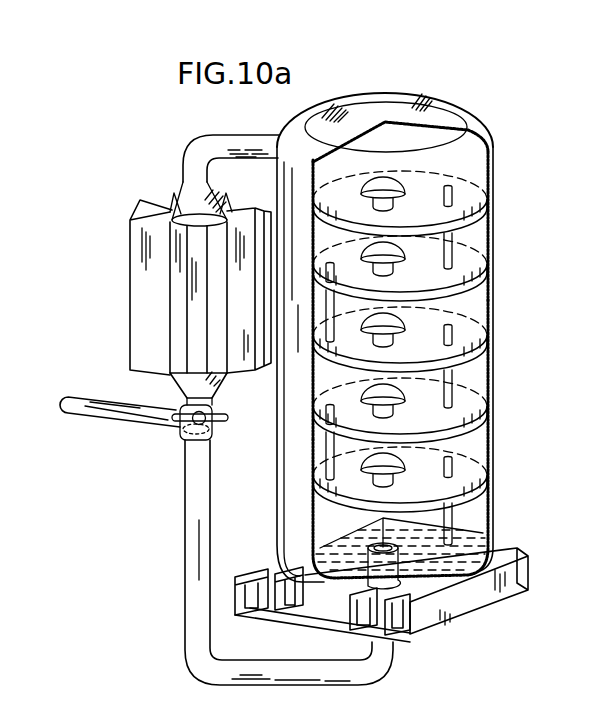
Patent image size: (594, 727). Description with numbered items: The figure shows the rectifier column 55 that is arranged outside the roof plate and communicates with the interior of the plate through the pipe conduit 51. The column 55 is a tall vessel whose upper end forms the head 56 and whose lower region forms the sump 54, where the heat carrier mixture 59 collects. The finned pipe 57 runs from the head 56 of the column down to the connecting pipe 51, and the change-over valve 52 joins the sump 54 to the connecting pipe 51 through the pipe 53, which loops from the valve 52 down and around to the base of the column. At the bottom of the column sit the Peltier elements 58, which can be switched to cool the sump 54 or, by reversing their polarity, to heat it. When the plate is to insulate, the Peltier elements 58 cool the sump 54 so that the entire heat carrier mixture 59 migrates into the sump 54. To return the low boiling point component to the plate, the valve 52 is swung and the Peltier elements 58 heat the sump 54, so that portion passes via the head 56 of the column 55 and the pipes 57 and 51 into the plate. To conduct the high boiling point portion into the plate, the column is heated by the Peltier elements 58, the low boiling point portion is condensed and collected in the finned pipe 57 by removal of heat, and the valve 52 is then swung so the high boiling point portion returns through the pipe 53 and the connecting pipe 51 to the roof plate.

The pipe conduit 51 is at (90, 407).
The change-over valve 52 is at (180, 428).
The pipe 53 is at (195, 587).
The lower region (sump) 54 is at (482, 510).
The rectifier column 55 is at (480, 370).
The head of the column 56 is at (473, 125).
The finned pipe 57 is at (174, 209).
The Peltier elements 58 is at (463, 603).
The heat carrier mixture 59 is at (483, 549).